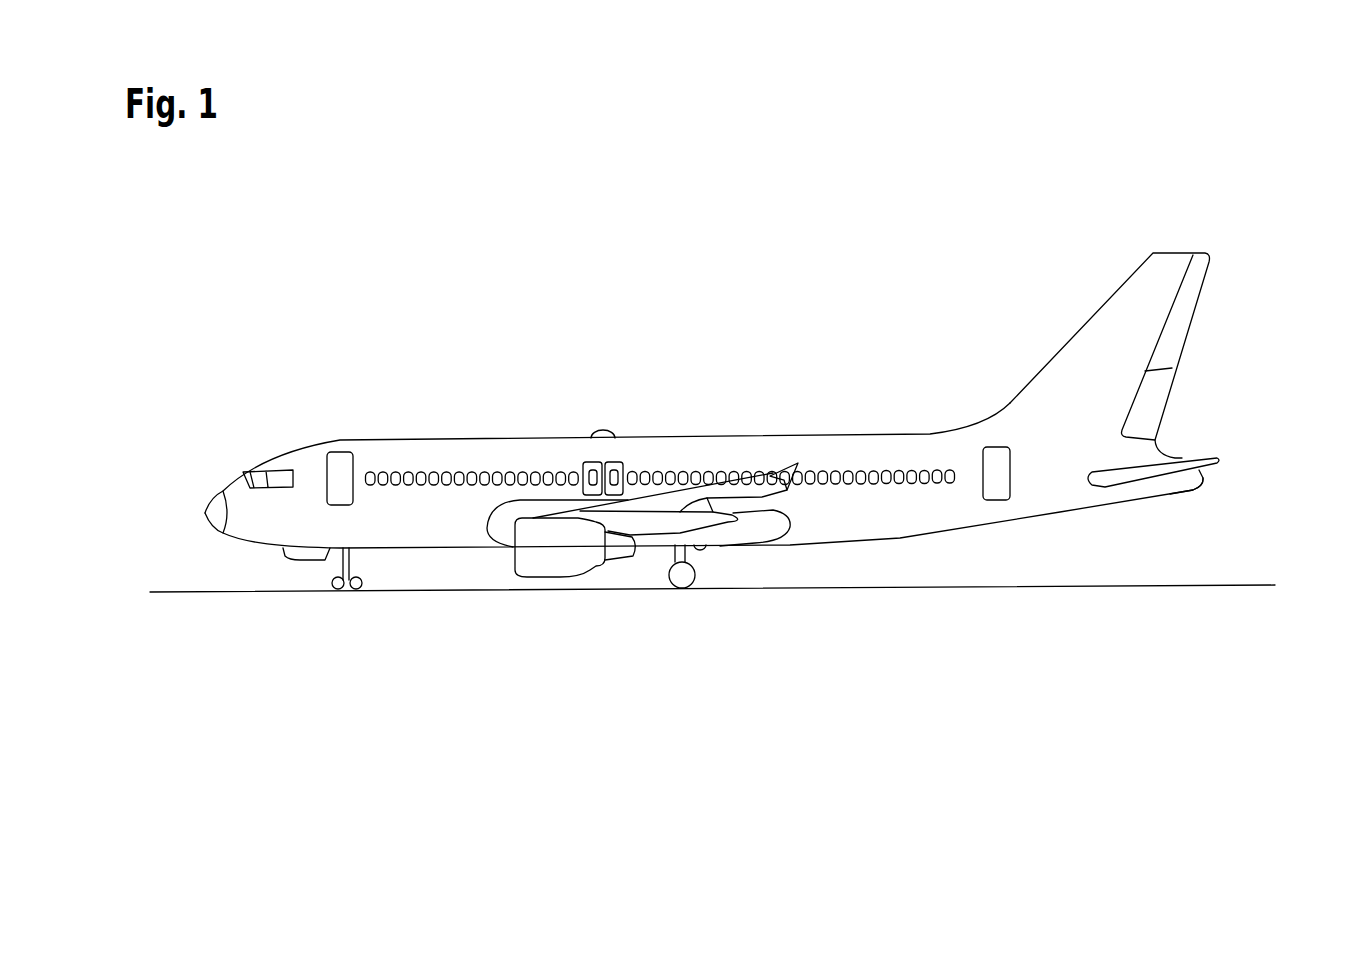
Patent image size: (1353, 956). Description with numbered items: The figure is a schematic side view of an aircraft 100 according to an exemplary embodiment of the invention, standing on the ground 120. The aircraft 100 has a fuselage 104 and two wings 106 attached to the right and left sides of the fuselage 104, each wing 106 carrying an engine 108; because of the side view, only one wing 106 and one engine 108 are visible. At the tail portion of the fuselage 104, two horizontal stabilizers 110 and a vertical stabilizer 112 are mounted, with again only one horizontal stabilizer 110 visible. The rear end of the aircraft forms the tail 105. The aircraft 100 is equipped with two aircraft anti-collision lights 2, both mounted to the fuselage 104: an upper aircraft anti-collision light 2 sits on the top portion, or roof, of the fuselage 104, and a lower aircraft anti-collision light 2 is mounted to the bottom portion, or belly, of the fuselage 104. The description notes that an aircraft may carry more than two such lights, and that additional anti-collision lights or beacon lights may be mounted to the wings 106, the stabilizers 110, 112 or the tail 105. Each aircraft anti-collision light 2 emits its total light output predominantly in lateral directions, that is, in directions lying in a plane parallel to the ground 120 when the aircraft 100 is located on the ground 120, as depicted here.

The aircraft 100 is at (564, 281).
The fuselage 104 is at (865, 456).
The wings 106 is at (698, 500).
The engine 108 is at (561, 553).
The horizontal stabilizers 110 is at (1182, 465).
The vertical stabilizer 112 is at (1148, 290).
The tail 105 is at (1214, 490).
The aircraft anti-collision light 2 is at (614, 427).
The ground 120 is at (982, 588).